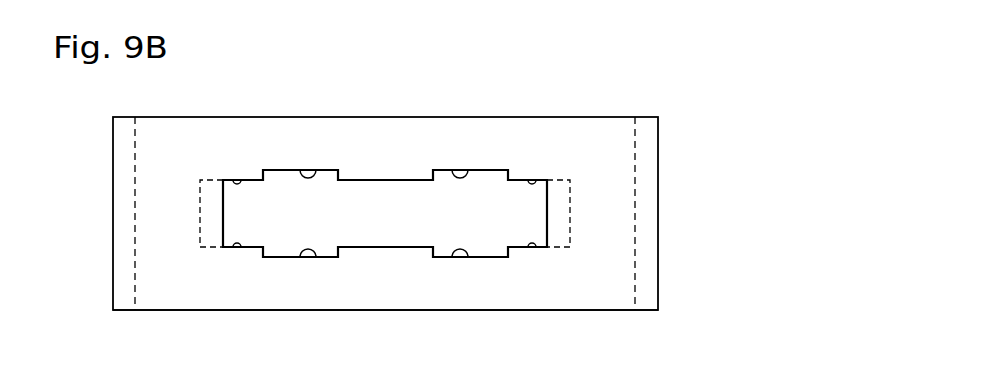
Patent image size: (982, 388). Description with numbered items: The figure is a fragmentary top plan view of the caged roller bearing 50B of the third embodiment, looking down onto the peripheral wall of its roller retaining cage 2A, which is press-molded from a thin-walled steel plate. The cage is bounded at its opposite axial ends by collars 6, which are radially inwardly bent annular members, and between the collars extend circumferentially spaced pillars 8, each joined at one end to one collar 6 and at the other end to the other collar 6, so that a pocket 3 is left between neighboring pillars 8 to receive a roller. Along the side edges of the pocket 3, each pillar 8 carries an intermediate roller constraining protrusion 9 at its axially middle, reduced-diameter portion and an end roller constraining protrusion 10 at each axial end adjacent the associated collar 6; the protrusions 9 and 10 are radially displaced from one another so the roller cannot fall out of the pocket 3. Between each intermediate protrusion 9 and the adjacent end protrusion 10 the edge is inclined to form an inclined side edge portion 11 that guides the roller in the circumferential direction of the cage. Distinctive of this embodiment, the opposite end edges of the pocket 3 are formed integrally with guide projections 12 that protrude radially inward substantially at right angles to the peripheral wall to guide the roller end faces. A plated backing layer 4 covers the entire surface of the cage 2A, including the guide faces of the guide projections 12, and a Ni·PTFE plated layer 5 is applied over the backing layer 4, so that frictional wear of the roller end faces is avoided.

The roller retaining cage 2A is at (472, 164).
The caged roller bearing 50B is at (658, 102).
The pocket 3 is at (403, 216).
The plated backing layer 4 is at (385, 329).
The Ni·PTFE plated layer 5 is at (165, 297).
The collar 6 is at (125, 178).
The pillar 8 is at (425, 278).
The intermediate roller constraining protrusion 9 is at (385, 180).
The end roller constraining protrusion 10 is at (233, 180).
The inclined side edge portion 11 is at (317, 178).
The guide projection 12 is at (215, 213).